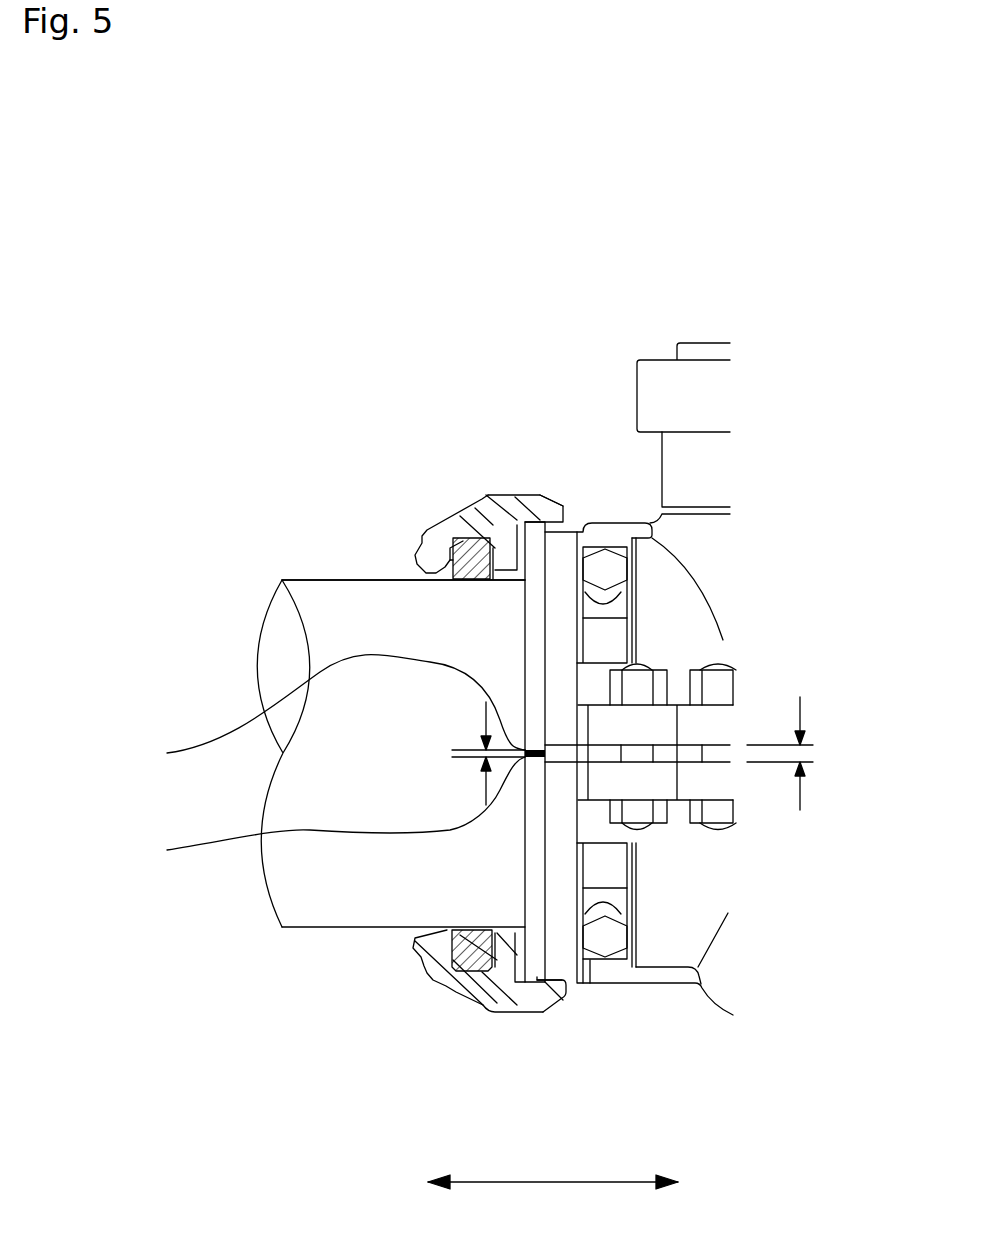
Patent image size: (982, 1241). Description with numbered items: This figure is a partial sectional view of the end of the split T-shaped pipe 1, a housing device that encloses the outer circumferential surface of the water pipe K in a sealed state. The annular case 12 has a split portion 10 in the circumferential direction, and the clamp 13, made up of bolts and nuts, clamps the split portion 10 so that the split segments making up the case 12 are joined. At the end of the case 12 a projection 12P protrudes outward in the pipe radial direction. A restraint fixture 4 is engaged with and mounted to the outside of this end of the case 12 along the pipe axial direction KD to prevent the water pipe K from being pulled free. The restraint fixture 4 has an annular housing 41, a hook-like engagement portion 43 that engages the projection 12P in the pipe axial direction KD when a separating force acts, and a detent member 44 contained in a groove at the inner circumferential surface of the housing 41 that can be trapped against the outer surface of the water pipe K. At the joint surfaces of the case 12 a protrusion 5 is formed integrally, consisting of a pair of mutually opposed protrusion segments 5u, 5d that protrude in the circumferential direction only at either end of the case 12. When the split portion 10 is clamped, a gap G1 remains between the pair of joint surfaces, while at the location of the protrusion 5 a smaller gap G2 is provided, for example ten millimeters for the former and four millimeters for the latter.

The split T-shaped pipe 1 is at (760, 378).
The restraint fixture 4 is at (432, 520).
The protrusion 5 is at (128, 733).
The protrusion segment 5u is at (331, 711).
The protrusion segment 5d is at (331, 811).
The water pipe K is at (323, 578).
The split portion 10 is at (733, 732).
The case 12 is at (620, 523).
The projection 12P is at (517, 495).
The clamp 13 is at (712, 835).
The housing 41 is at (502, 1013).
The engagement portion 43 is at (462, 955).
The detent member 44 is at (457, 927).
The gap G1 is at (828, 753).
The gap G2 is at (471, 753).
The pipe axial direction KD is at (553, 1195).